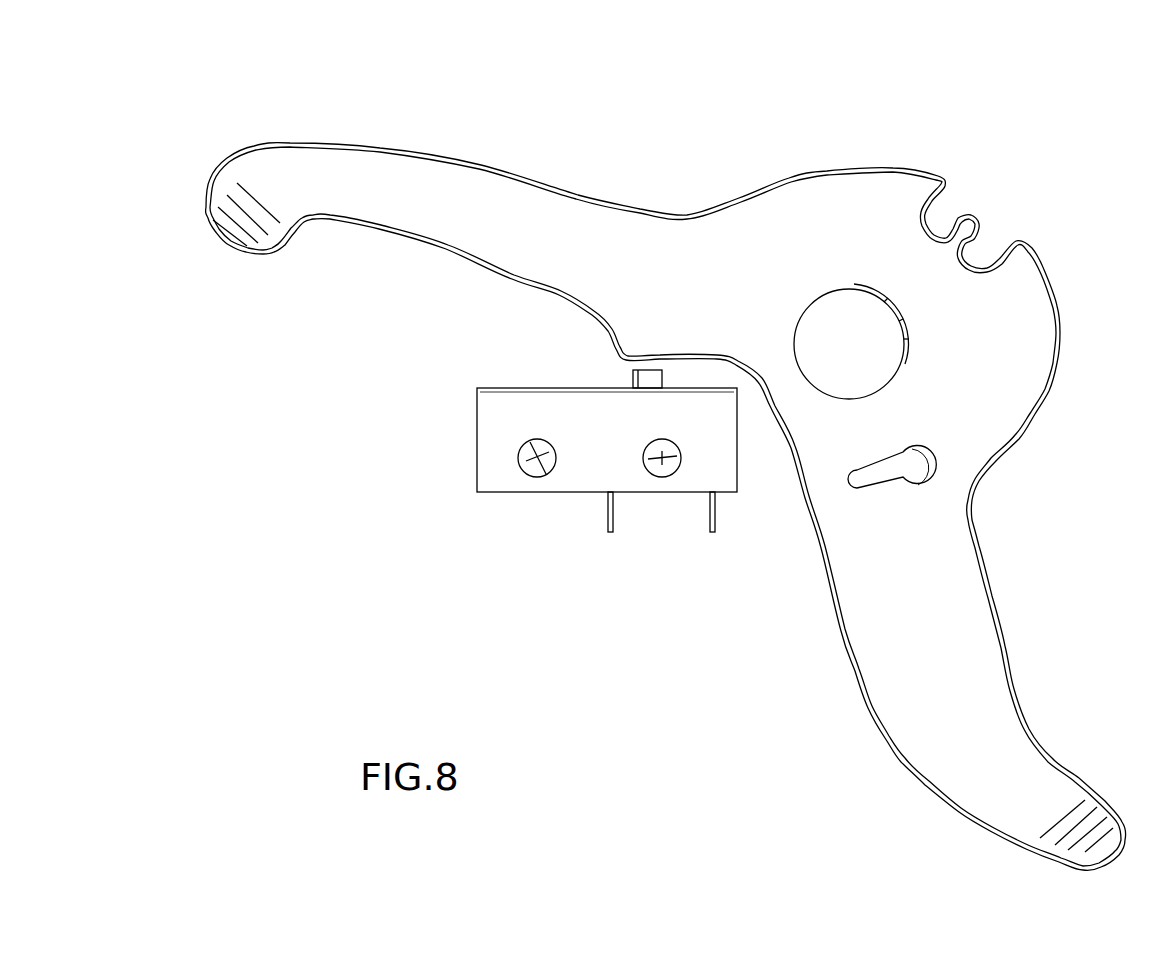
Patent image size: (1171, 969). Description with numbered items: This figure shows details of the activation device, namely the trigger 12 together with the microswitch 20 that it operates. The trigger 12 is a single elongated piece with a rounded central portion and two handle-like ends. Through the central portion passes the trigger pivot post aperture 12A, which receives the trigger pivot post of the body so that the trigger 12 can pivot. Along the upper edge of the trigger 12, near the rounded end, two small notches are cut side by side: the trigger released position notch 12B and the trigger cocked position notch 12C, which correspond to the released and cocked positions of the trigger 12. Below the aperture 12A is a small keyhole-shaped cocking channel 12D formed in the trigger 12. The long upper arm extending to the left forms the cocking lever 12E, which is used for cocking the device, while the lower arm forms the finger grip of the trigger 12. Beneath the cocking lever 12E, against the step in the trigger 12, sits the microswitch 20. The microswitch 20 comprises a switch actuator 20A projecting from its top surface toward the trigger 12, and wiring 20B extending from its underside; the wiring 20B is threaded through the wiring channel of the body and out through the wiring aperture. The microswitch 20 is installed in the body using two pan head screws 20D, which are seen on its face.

The trigger 12 is at (883, 595).
The trigger pivot post aperture 12A is at (828, 390).
The trigger released position notch 12B is at (930, 217).
The trigger cocked position notch 12C is at (977, 263).
The cocking channel 12D is at (943, 465).
The cocking lever 12E is at (257, 152).
The microswitch 20 is at (580, 465).
The switch actuator 20A is at (630, 381).
The wiring 20B is at (708, 532).
The pan head screws 20D is at (643, 450).